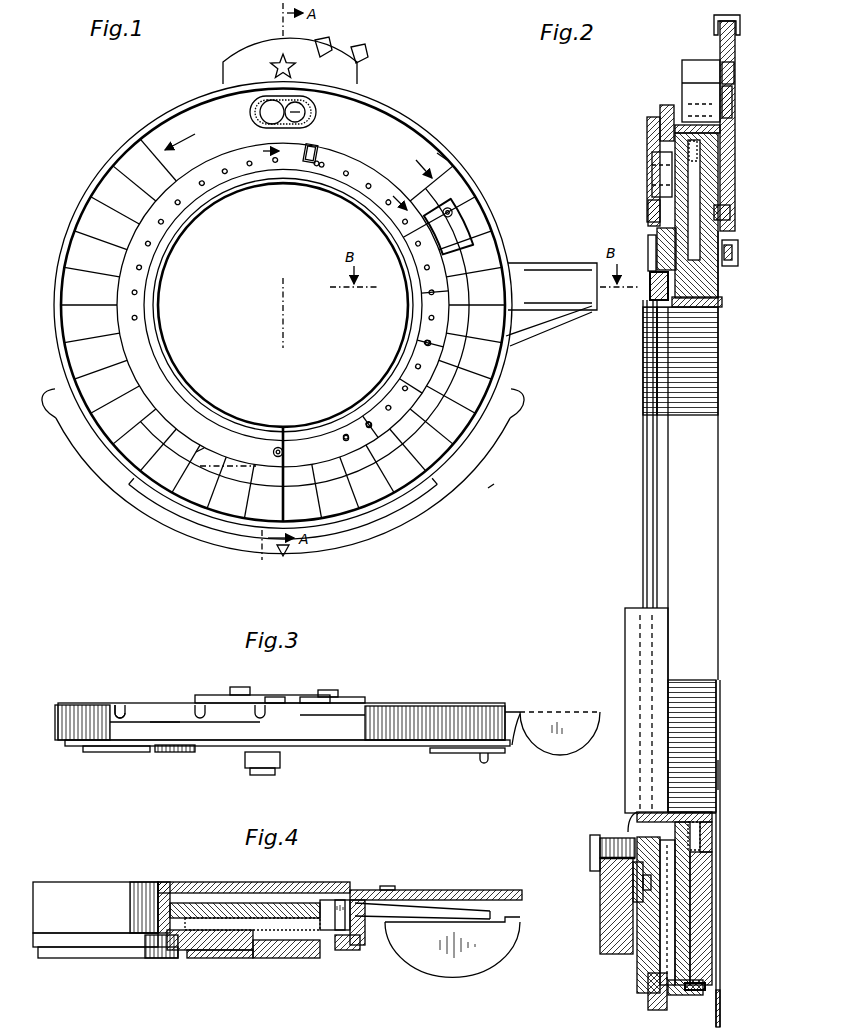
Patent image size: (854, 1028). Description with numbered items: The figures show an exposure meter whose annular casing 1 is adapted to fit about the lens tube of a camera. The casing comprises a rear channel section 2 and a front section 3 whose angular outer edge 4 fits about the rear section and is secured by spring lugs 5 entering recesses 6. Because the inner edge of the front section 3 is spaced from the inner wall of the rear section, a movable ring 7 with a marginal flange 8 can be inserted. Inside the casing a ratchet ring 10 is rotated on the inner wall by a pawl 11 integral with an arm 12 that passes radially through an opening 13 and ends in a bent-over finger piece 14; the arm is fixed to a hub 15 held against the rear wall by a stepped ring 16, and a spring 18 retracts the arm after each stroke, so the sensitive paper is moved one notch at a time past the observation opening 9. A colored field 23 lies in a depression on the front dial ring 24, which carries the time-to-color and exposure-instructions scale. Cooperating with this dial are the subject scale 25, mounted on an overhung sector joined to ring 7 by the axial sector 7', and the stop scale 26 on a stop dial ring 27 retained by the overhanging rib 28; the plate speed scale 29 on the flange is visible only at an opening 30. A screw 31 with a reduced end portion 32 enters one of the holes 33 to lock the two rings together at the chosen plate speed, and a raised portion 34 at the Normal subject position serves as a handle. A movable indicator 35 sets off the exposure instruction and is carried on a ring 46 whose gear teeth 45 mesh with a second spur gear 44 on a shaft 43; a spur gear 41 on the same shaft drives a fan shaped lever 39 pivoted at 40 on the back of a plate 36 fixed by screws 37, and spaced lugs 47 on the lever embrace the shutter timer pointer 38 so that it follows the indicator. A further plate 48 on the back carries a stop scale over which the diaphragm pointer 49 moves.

In FIG. 1, the casing 1 is at (137, 300).
In FIG. 2, the rear channel section 2 is at (712, 814).
In FIG. 4, the rear channel section 2 is at (182, 882).
In FIG. 2, the front section 3 is at (686, 146).
In FIG. 2, the angular outer edge 4 is at (682, 995).
In FIG. 2, the spring lugs 5 is at (722, 1008).
In FIG. 2, the recesses 6 is at (706, 986).
In FIG. 2, the movable ring 7 is at (644, 292).
In FIG. 2, the axial sector 7' is at (632, 710).
In FIG. 2, the marginal flange 8 is at (648, 884).
In FIG. 1, the observation opening 9 is at (262, 106).
In FIG. 2, the observation opening 9 is at (652, 174).
In FIG. 2, the ratchet ring 10 is at (690, 858).
In FIG. 4, the ratchet ring 10 is at (240, 910).
In FIG. 4, the pawl 11 is at (332, 900).
In FIG. 4, the arm 12 is at (368, 890).
In FIG. 4, the opening 13 is at (366, 940).
In FIG. 1, the finger piece 14 is at (554, 266).
In FIG. 3, the finger piece 14 is at (548, 740).
In FIG. 4, the finger piece 14 is at (486, 960).
In FIG. 2, the hub 15 is at (706, 830).
In FIG. 2, the stepped ring 16 is at (700, 880).
In FIG. 1, the spring 18 is at (575, 316).
In FIG. 3, the spring 18 is at (515, 746).
In FIG. 4, the spring 18 is at (432, 916).
In FIG. 1, the colored field 23 is at (312, 114).
In FIG. 1, the front dial ring 24 is at (440, 158).
In FIG. 4, the front dial ring 24 is at (298, 958).
In FIG. 1, the subject scale 25 is at (198, 450).
In FIG. 2, the subject scale 25 is at (626, 775).
In FIG. 1, the stop scale 26 is at (426, 342).
In FIG. 2, the stop dial ring 27 is at (636, 870).
In FIG. 4, the stop dial ring 27 is at (215, 952).
In FIG. 2, the overhanging rib 28 is at (648, 210).
In FIG. 4, the overhanging rib 28 is at (250, 958).
In FIG. 2, the plate speed scale 29 is at (658, 236).
In FIG. 1, the opening 30 is at (308, 162).
In FIG. 2, the opening 30 is at (652, 252).
In FIG. 2, the screw 31 is at (590, 844).
In FIG. 2, the reduced end portion 32 is at (628, 820).
In FIG. 1, the holes 33 is at (368, 424).
In FIG. 1, the raised portion 34 is at (278, 446).
In FIG. 2, the raised portion 34 is at (602, 930).
In FIG. 3, the raised portion 34 is at (145, 752).
In FIG. 1, the movable indicator 35 is at (478, 204).
In FIG. 3, the movable indicator 35 is at (468, 753).
In FIG. 1, the plate 36 is at (223, 62).
In FIG. 2, the plate 36 is at (724, 302).
In FIG. 3, the plate 36 is at (365, 700).
In FIG. 2, the screws 37 is at (739, 247).
In FIG. 3, the screws 37 is at (238, 687).
In FIG. 1, the pointer 38 is at (341, 50).
In FIG. 2, the pointer 38 is at (741, 30).
In FIG. 3, the pointer 38 is at (318, 690).
In FIG. 2, the fan shaped lever 39 is at (736, 178).
In FIG. 2, the pivot 40 is at (731, 213).
In FIG. 2, the spur gear 41 is at (735, 86).
In FIG. 2, the shaft 43 is at (733, 92).
In FIG. 1, the second spur gear 44 is at (282, 60).
In FIG. 2, the second spur gear 44 is at (690, 68).
In FIG. 3, the second spur gear 44 is at (278, 700).
In FIG. 3, the gear teeth 45 is at (120, 716).
In FIG. 2, the ring 46 is at (665, 104).
In FIG. 3, the ring 46 is at (156, 728).
In FIG. 4, the ring 46 is at (356, 952).
In FIG. 1, the spaced lugs 47 is at (344, 50).
In FIG. 1, the plate 48 is at (490, 486).
In FIG. 2, the plate 48 is at (722, 770).
In FIG. 1, the pointer 49 is at (290, 552).